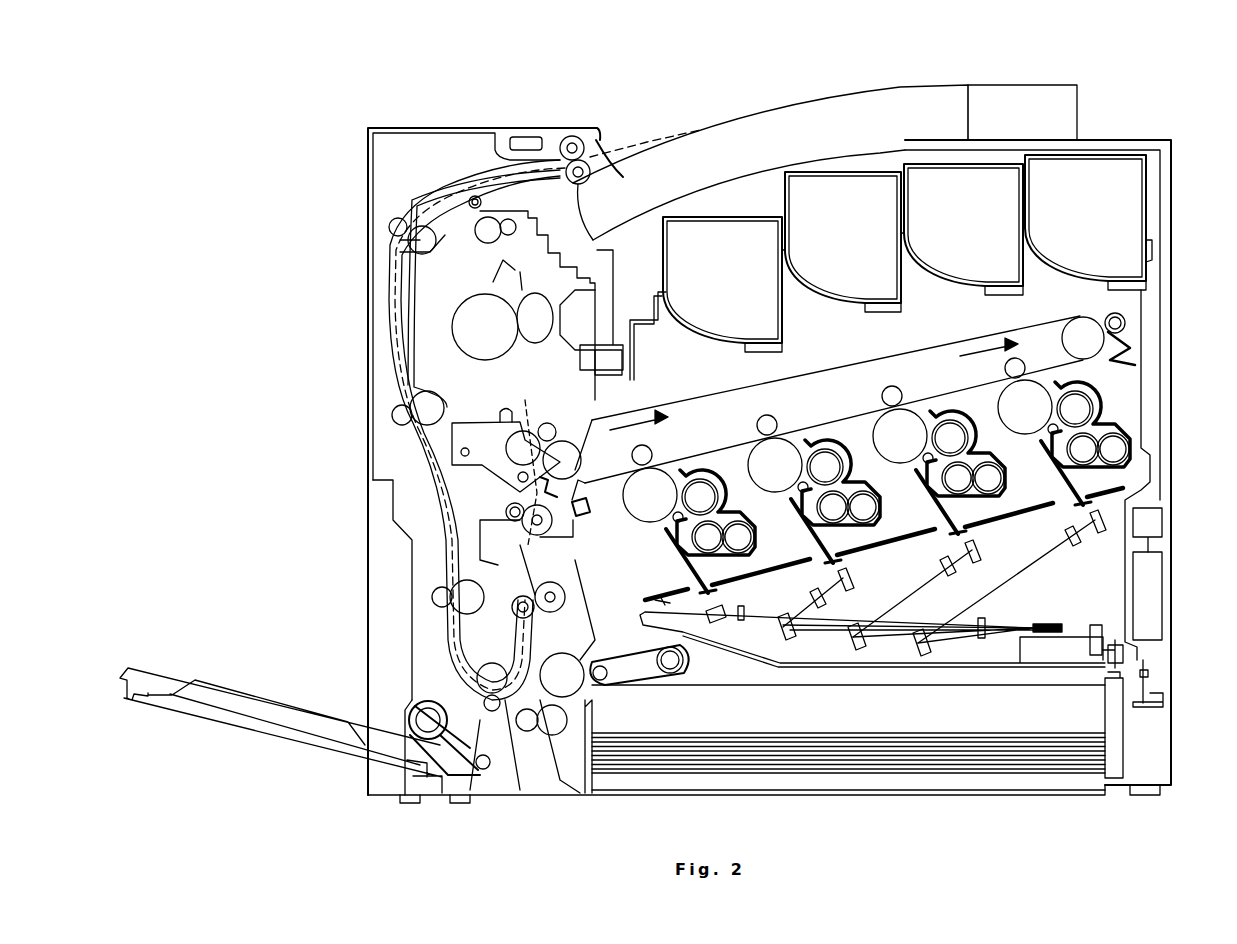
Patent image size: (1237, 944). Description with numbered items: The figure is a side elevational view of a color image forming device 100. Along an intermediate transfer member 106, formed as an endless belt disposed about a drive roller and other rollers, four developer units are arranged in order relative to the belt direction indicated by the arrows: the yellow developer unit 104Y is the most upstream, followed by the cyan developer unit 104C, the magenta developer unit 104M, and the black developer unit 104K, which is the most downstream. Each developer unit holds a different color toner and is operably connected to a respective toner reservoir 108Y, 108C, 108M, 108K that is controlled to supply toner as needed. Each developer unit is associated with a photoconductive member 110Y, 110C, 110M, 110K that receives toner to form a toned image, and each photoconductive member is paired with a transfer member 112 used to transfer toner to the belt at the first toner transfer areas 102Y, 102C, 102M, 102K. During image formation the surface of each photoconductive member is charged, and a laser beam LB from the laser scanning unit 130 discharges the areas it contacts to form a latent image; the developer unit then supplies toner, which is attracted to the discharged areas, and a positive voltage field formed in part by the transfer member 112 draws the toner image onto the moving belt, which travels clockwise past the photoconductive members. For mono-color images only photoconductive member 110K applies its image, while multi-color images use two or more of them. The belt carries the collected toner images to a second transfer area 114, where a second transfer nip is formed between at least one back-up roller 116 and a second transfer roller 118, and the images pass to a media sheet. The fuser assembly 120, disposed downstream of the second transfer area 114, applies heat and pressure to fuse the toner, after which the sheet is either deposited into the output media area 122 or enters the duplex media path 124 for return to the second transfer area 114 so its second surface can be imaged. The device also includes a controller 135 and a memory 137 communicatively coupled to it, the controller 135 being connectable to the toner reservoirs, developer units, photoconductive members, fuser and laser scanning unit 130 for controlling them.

The image forming device 100 is at (298, 140).
The first toner transfer area 102K is at (618, 485).
The first toner transfer area 102M is at (735, 455).
The first toner transfer area 102C is at (860, 428).
The first toner transfer area 102Y is at (985, 405).
The black developer unit 104K is at (695, 458).
The magenta developer unit 104M is at (818, 428).
The cyan developer unit 104C is at (940, 400).
The yellow developer unit 104Y is at (1125, 400).
The intermediate transfer member 106 is at (930, 345).
The toner reservoir 108K is at (722, 284).
The toner reservoir 108M is at (841, 242).
The toner reservoir 108C is at (962, 229).
The toner reservoir 108Y is at (1087, 222).
The photoconductive member 110K is at (655, 510).
The photoconductive member 110M is at (772, 480).
The photoconductive member 110C is at (893, 452).
The photoconductive member 110Y is at (1020, 424).
The transfer member 112 is at (632, 460).
The second transfer area 114 is at (505, 493).
The back-up roller 116 is at (590, 430).
The second transfer roller 118 is at (503, 442).
The fuser assembly 120 is at (488, 288).
The output media area 122 is at (712, 150).
The duplex media path 124 is at (392, 362).
The laser scanning unit 130 is at (873, 588).
The controller 135 is at (1155, 583).
The memory 137 is at (1155, 528).
The laser beam LB is at (762, 612).